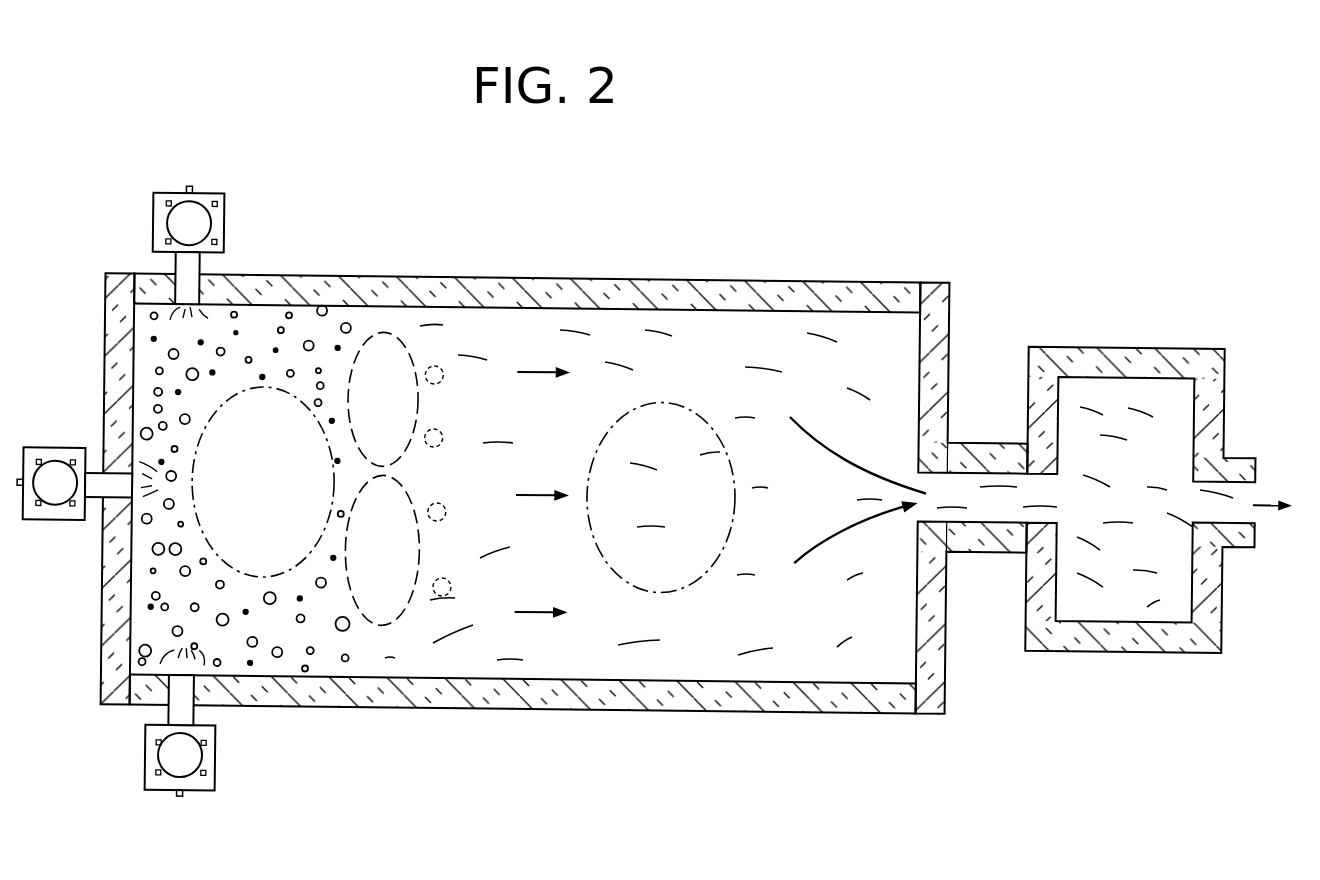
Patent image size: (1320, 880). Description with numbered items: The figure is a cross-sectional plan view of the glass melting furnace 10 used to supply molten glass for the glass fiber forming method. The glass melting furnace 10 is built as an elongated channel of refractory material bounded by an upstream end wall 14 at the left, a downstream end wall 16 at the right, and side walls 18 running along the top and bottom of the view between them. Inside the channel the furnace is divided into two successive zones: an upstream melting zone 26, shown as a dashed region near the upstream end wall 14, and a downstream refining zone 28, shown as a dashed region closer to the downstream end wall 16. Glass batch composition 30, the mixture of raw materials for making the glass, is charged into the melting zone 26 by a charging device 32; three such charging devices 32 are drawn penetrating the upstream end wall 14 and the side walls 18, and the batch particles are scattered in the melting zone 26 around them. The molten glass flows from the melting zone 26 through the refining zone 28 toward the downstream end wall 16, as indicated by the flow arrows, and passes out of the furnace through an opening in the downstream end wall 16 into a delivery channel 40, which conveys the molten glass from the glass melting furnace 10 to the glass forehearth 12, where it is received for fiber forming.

The glass melting furnace 10 is at (841, 252).
The glass forehearth 12 is at (1301, 486).
The upstream end wall 14 is at (103, 588).
The downstream end wall 16 is at (949, 333).
The side walls 18 is at (485, 279).
The upstream melting zone 26 is at (300, 501).
The downstream refining zone 28 is at (820, 501).
The glass batch composition 30 is at (191, 381).
The charging device 32 is at (219, 225).
The delivery channel 40 is at (1243, 449).